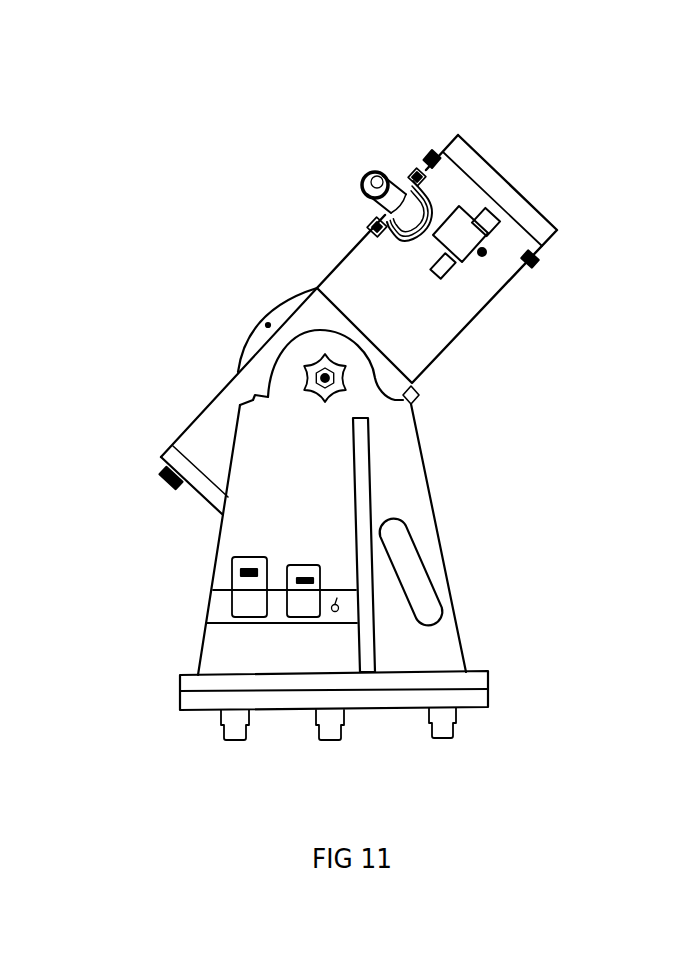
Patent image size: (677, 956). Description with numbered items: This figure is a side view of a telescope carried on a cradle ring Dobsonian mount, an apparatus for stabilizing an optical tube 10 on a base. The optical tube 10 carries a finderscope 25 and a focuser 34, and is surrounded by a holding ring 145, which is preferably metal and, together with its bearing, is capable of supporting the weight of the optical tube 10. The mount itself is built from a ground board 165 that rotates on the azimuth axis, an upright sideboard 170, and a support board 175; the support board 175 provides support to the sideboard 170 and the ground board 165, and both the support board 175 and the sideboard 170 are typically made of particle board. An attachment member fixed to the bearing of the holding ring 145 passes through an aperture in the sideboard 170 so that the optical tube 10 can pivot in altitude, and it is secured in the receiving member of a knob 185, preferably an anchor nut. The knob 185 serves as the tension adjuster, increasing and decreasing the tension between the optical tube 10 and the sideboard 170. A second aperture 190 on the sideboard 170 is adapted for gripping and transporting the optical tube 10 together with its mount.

The optical tube 10 is at (413, 330).
The focuser 34 is at (375, 160).
The finderscope 25 is at (477, 262).
The holding ring 145 is at (258, 366).
The knob 185 is at (307, 395).
The sideboard 170 is at (388, 453).
The support board 175 is at (356, 497).
The second aperture 190 is at (413, 580).
The ground board 165 is at (495, 686).